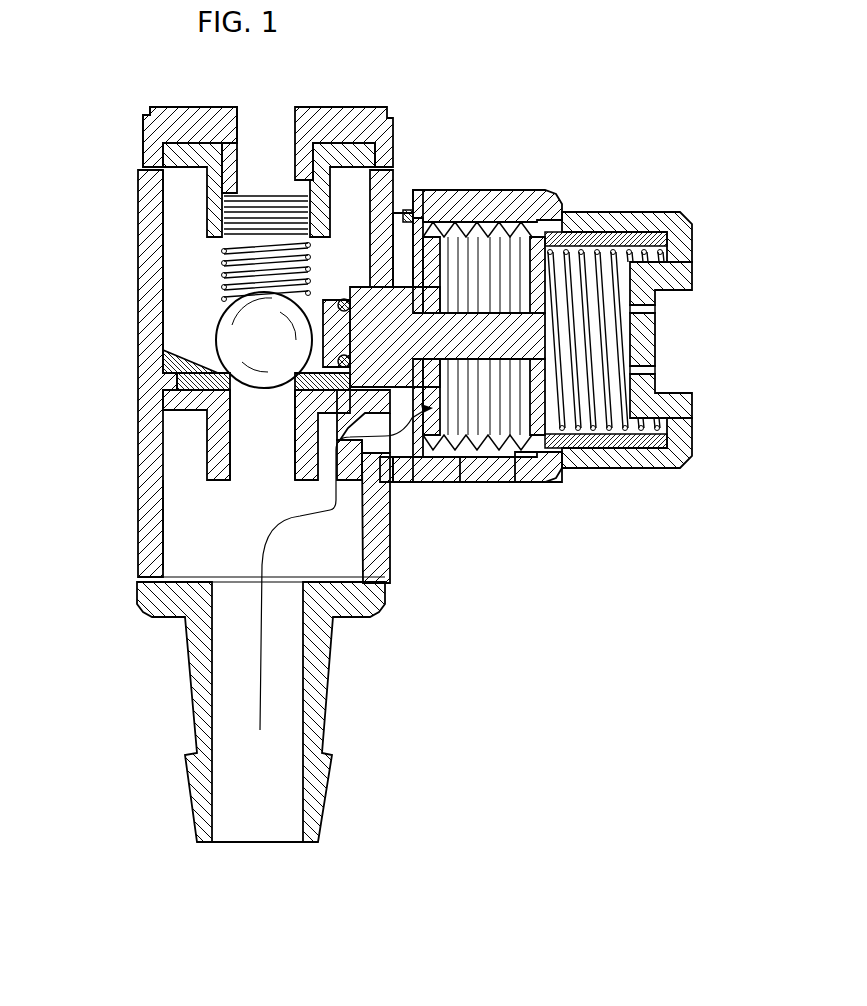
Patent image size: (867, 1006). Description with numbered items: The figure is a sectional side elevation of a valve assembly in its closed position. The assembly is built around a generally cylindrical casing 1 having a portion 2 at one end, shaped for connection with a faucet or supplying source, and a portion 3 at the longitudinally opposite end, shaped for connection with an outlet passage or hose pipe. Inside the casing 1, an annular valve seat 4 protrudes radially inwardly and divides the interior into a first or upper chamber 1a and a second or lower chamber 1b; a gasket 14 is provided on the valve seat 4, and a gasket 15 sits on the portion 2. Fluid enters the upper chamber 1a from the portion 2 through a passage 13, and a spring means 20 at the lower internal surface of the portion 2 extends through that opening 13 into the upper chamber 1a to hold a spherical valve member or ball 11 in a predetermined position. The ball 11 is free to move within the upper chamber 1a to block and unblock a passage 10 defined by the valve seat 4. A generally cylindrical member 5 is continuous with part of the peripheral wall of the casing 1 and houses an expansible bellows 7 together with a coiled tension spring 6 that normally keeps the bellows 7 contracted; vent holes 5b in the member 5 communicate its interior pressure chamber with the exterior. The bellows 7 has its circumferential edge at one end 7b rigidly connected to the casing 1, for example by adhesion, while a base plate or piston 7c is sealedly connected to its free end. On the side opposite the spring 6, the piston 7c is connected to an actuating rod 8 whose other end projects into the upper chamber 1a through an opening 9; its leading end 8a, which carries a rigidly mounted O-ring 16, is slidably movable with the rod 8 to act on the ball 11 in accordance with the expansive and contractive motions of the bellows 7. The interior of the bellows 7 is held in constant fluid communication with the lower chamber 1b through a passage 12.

The casing 1 is at (137, 547).
The upper chamber 1a is at (190, 310).
The lower chamber 1b is at (173, 513).
The portion 2 is at (270, 110).
The portion 3 is at (187, 705).
The annular valve seat 4 is at (177, 407).
The cylindrical member 5 is at (687, 222).
The vent holes 5b is at (657, 310).
The coiled tension spring 6 is at (615, 430).
The expansible bellows 7 is at (500, 233).
The end of bellows 7b is at (440, 482).
The base plate or piston 7c is at (538, 482).
The actuating rod 8 is at (480, 388).
The leading end 8a is at (404, 216).
The opening 9 is at (408, 285).
The passage 10 is at (230, 437).
The spherical valve member or ball 11 is at (236, 345).
The passage 12 is at (392, 483).
The passage 13 is at (250, 162).
The gasket 14 is at (180, 387).
The gasket 15 is at (194, 122).
The O-ring 16 is at (345, 585).
The spring means 20 is at (255, 246).